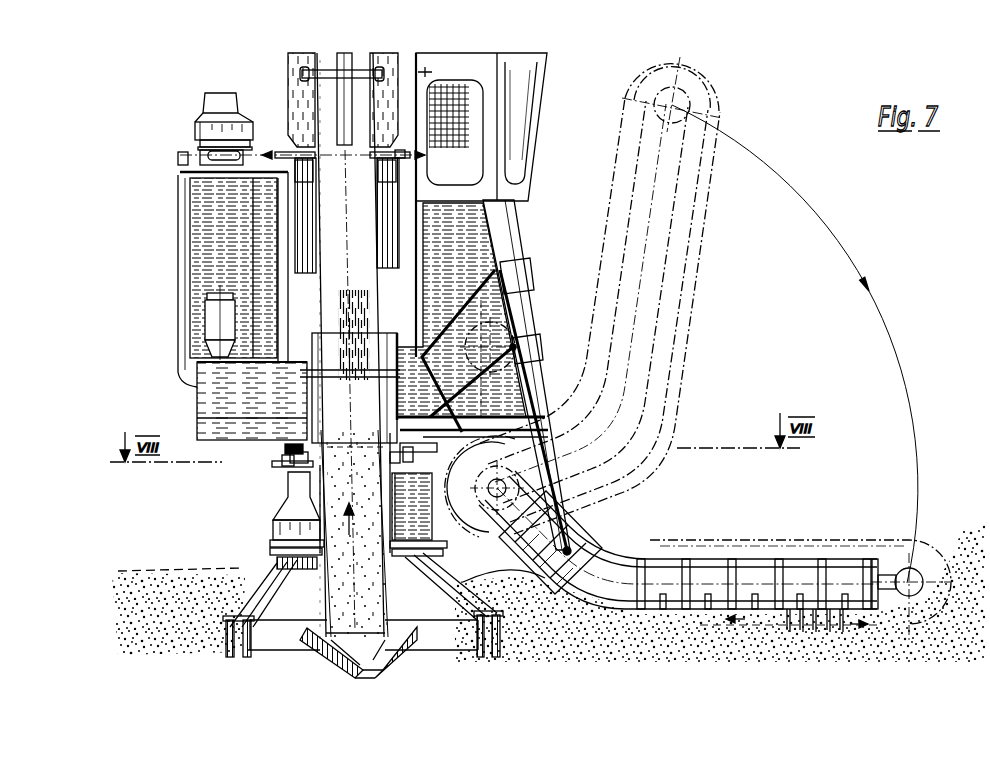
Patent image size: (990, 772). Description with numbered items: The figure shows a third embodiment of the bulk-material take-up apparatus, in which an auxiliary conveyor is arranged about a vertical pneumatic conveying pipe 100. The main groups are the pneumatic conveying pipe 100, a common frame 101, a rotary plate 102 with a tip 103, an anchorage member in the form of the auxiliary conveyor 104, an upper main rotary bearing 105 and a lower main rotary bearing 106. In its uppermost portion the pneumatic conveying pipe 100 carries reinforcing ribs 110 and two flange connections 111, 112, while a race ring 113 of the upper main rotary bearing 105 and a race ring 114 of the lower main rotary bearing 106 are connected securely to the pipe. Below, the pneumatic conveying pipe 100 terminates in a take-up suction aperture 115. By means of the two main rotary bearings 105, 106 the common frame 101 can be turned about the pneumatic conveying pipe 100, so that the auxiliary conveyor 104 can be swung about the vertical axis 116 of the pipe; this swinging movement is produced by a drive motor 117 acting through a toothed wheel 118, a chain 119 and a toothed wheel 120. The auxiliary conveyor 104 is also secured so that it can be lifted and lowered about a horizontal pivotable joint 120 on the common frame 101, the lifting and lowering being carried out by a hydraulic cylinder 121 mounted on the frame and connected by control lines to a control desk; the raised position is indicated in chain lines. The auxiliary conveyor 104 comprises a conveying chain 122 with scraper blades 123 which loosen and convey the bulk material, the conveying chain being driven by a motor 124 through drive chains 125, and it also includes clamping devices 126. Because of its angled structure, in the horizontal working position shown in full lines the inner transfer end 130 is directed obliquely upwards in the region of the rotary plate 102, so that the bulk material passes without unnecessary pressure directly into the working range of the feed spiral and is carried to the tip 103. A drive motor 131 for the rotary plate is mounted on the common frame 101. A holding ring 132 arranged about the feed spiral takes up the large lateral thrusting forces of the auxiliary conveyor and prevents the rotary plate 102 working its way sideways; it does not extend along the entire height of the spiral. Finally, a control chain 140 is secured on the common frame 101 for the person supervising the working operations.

The pneumatic conveying pipe 100 is at (340, 297).
The common frame 101 is at (222, 408).
The rotary plate 102 is at (285, 643).
The tip 103 is at (348, 658).
The auxiliary conveyor 104 is at (692, 570).
The upper main rotary bearing 105 is at (290, 180).
The lower main rotary bearing 106 is at (285, 458).
The reinforcing ribs 110 is at (298, 66).
The flange connection 111 is at (354, 70).
The flange connection 112 is at (367, 377).
The race ring 113 is at (287, 172).
The race ring 114 is at (283, 450).
The take-up suction aperture 115 is at (380, 632).
The vertical axis 116 is at (352, 328).
The drive motor 117 is at (210, 122).
The toothed wheel 118 is at (222, 157).
The chain 119 is at (263, 152).
The horizontal pivotable joint 120 is at (400, 153).
The hydraulic cylinder 121 is at (527, 327).
The conveying chain 122 is at (773, 543).
The scraper blades 123 is at (845, 623).
The motor 124 is at (517, 348).
The drive chains 125 is at (508, 410).
The clamping devices 126 is at (550, 530).
The inner transfer end 130 is at (595, 525).
The drive motor 131 is at (290, 530).
The holding ring 132 is at (235, 648).
The control chain 140 is at (518, 137).